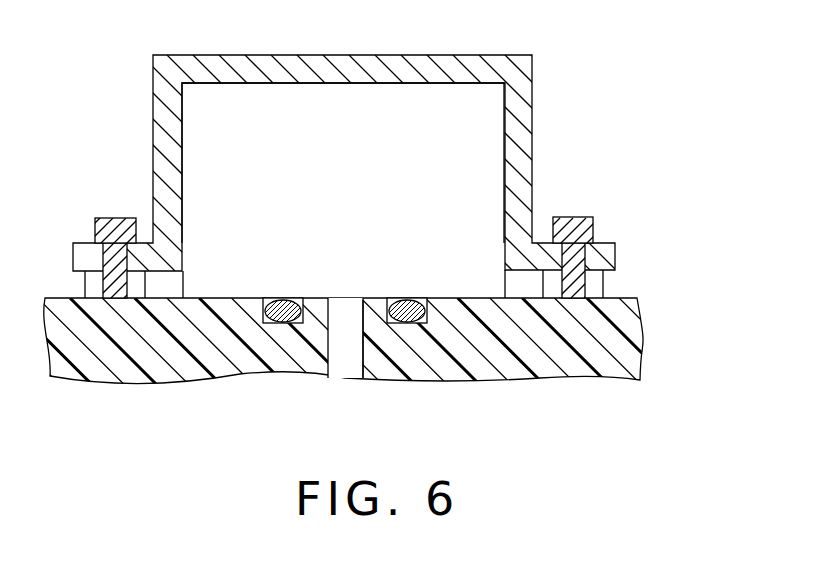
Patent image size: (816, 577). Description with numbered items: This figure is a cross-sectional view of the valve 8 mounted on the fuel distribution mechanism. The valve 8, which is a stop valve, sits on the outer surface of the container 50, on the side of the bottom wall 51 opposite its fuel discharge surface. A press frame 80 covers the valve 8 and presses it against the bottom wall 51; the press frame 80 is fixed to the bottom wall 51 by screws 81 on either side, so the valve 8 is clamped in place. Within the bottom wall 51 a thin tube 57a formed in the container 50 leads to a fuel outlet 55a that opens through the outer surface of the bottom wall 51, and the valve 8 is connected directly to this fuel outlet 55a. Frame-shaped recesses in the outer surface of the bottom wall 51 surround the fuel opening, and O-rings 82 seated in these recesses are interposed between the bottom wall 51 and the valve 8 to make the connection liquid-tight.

The valve 8 is at (312, 104).
The press frame 80 is at (380, 55).
The screws 81 is at (118, 217).
The O-rings 82 is at (283, 323).
The fuel outlet 55a is at (329, 300).
The thin tube 57a is at (363, 348).
The container 50 is at (387, 343).
The bottom wall 51 is at (645, 338).